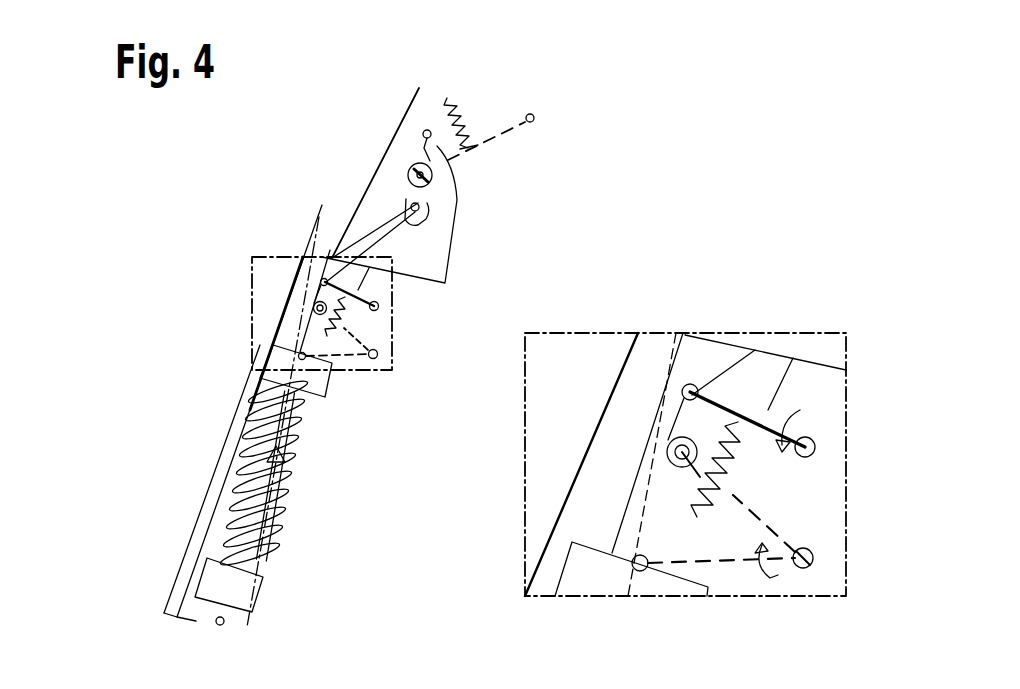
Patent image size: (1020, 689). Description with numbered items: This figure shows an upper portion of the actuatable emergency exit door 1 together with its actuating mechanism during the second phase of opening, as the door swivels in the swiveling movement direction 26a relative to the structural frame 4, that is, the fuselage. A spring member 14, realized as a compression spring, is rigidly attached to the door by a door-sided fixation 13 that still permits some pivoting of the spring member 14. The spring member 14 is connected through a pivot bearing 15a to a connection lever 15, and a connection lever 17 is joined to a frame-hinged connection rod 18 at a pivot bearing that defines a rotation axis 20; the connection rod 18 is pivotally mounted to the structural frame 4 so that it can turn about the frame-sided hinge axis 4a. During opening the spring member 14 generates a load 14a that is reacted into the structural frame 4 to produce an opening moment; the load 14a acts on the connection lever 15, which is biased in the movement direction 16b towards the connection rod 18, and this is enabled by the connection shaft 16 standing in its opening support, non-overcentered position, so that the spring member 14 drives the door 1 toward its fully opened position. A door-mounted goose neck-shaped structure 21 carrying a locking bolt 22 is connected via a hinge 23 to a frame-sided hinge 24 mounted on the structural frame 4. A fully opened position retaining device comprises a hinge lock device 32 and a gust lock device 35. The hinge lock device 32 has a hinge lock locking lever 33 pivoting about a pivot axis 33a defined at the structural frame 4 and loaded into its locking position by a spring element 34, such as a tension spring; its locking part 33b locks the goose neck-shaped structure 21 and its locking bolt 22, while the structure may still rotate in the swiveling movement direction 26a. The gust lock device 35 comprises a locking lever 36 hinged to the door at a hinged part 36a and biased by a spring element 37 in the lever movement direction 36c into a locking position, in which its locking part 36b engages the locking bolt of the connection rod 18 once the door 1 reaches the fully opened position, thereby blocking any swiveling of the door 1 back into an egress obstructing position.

The actuatable emergency exit door 1 is at (151, 516).
The structural frame 4 is at (377, 166).
The frame-sided hinge axis 4a is at (394, 202).
The door-sided fixation 13 is at (228, 623).
The spring member 14 is at (230, 464).
The load 14a is at (277, 470).
The connection lever 15 is at (350, 365).
The pivot bearing 15a is at (293, 355).
The connection shaft 16 is at (378, 360).
The movement direction 16b is at (767, 597).
The connection lever 17 is at (332, 312).
The frame-hinged connection rod 18 is at (387, 227).
The rotation axis 20 is at (296, 291).
The door-mounted goose neck-shaped structure 21 is at (428, 240).
The locking bolt 22 is at (442, 186).
The hinge 23 is at (421, 146).
The frame-sided hinge 24 is at (415, 122).
The swiveling movement direction 26a is at (458, 300).
The hinge lock device 32 is at (476, 106).
The hinge lock locking lever 33 is at (497, 133).
The pivot axis 33a is at (543, 104).
The locking part 33b is at (460, 158).
The spring element 34 is at (438, 138).
The gust lock device 35 is at (362, 293).
The locking lever 36 is at (378, 312).
The hinged part 36a is at (706, 377).
The locking part 36b is at (824, 445).
The lever movement direction 36c is at (797, 397).
The spring element 37 is at (345, 330).